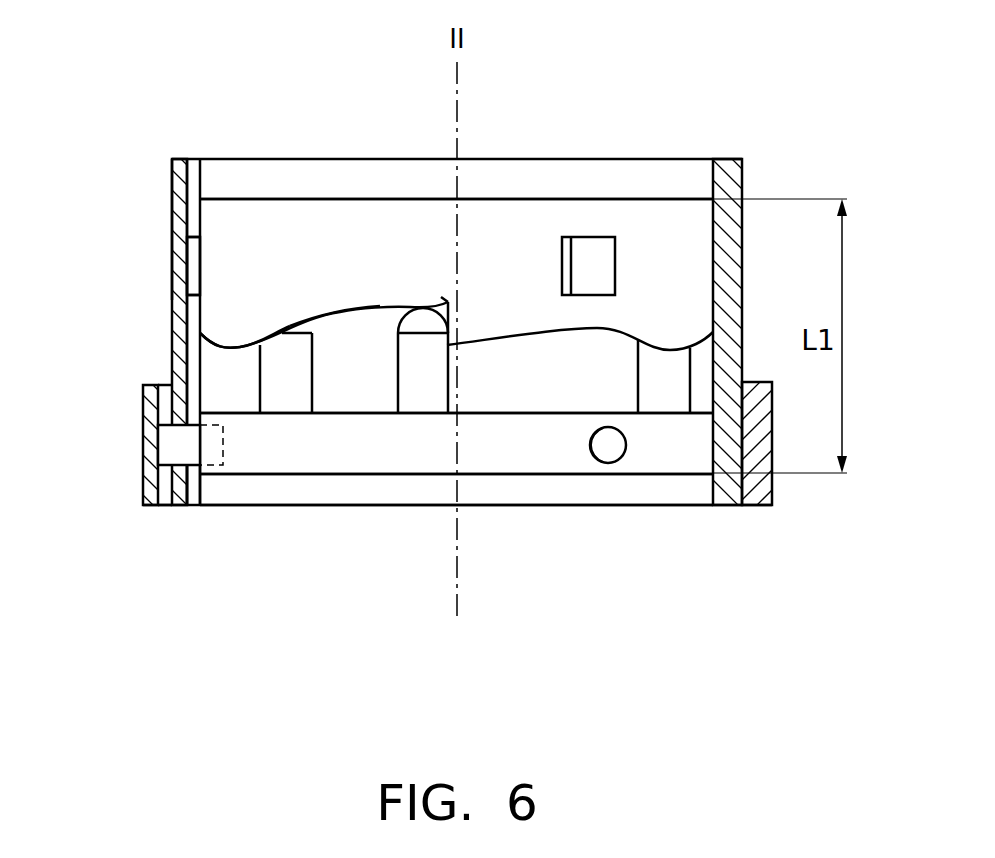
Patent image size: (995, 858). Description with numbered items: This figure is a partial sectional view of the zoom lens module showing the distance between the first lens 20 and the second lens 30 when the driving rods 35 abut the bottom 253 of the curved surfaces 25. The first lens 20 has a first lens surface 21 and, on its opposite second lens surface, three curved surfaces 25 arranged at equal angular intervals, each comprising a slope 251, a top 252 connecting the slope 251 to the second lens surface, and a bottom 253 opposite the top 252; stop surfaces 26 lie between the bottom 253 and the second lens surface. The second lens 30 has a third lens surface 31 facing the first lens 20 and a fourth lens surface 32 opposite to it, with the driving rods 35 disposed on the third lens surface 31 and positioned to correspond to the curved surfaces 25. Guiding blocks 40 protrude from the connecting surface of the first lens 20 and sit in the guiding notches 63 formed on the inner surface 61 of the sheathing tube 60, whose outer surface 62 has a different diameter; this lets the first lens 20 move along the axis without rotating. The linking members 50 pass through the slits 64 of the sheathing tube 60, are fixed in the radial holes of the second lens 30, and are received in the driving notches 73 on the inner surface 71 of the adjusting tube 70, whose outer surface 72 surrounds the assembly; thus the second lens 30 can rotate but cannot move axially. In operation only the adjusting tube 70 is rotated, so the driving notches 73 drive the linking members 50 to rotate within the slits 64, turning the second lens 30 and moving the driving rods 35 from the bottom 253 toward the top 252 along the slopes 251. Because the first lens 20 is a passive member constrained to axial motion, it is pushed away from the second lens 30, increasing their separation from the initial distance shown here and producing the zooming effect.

The first lens 20 is at (662, 188).
The first lens surface 21 is at (507, 197).
The curved surfaces 25 is at (340, 324).
The slope 251 is at (363, 308).
The top 252 is at (233, 345).
The bottom 253 is at (420, 307).
The stop surfaces 26 is at (448, 301).
The second lens 30 is at (497, 484).
The third lens surface 31 is at (558, 417).
The fourth lens surface 32 is at (658, 477).
The driving rods 35 is at (425, 388).
The guiding blocks 40 is at (195, 272).
The linking members 50 is at (173, 445).
The sheathing tube 60 is at (727, 150).
The inner surface 61 is at (199, 180).
The outer surface 62 is at (172, 164).
The guiding notches 63 is at (192, 210).
The slits 64 is at (178, 395).
The adjusting tube 70 is at (755, 514).
The inner surface 71 is at (192, 500).
The outer surface 72 is at (140, 478).
The driving notches 73 is at (168, 497).